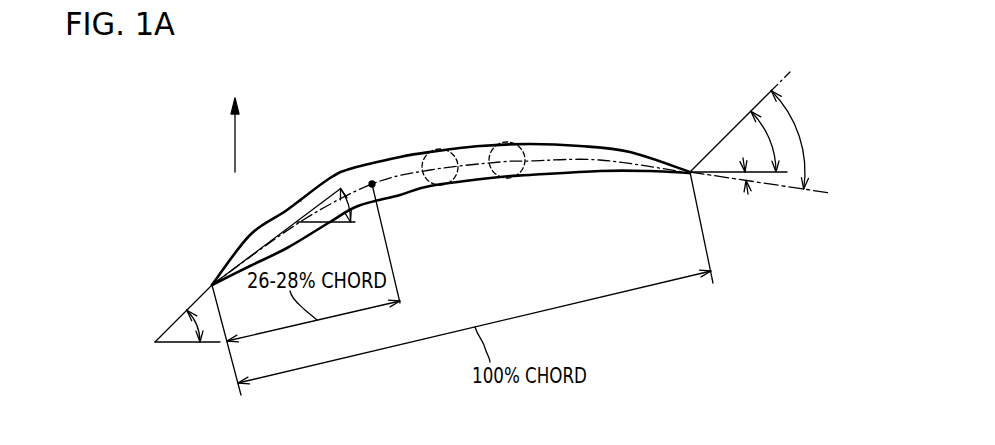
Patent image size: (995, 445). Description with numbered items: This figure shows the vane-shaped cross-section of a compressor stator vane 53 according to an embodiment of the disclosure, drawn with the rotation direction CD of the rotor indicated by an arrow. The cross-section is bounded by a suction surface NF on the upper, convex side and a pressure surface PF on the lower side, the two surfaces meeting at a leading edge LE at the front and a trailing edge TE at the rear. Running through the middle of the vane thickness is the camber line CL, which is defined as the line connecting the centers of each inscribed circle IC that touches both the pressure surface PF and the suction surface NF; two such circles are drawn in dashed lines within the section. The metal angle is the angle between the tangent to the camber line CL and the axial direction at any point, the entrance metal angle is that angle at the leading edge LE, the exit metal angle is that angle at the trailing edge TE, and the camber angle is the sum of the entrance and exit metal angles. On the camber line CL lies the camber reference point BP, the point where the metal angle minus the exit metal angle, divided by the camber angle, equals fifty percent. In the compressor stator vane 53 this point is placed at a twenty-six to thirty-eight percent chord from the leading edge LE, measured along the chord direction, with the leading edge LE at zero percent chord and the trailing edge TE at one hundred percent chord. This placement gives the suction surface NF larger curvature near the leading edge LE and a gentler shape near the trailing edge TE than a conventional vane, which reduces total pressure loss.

The compressor stator vane 53 is at (488, 105).
The leading edge LE is at (210, 286).
The trailing edge TE is at (691, 171).
The suction surface NF is at (317, 186).
The pressure surface PF is at (563, 173).
The camber line CL is at (582, 158).
The camber reference point BP is at (372, 184).
The inscribed circle IC is at (500, 178).
The rotation direction CD is at (214, 135).